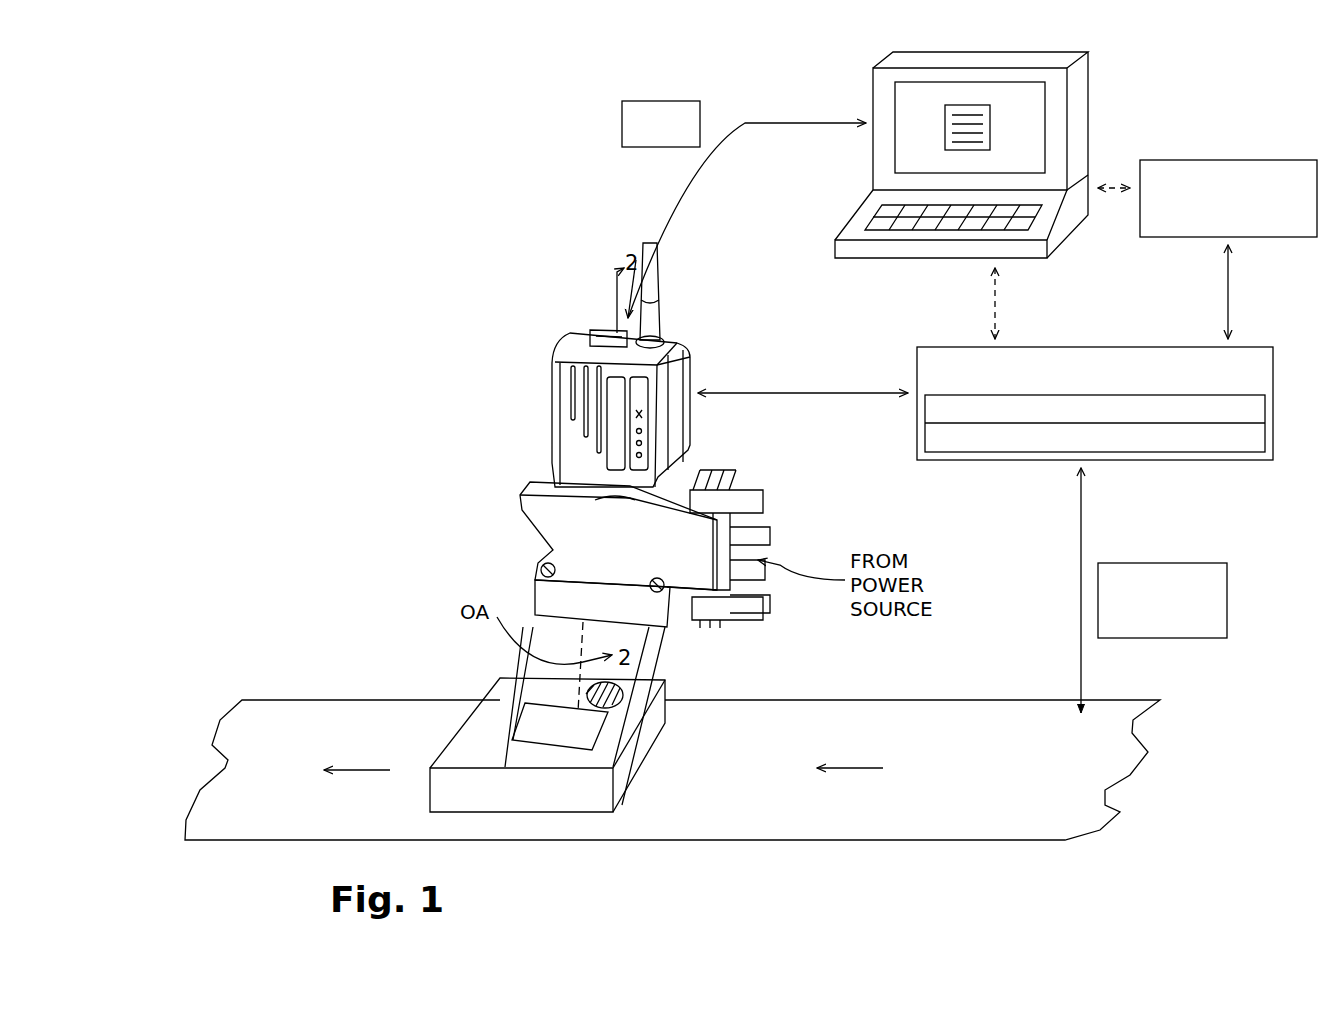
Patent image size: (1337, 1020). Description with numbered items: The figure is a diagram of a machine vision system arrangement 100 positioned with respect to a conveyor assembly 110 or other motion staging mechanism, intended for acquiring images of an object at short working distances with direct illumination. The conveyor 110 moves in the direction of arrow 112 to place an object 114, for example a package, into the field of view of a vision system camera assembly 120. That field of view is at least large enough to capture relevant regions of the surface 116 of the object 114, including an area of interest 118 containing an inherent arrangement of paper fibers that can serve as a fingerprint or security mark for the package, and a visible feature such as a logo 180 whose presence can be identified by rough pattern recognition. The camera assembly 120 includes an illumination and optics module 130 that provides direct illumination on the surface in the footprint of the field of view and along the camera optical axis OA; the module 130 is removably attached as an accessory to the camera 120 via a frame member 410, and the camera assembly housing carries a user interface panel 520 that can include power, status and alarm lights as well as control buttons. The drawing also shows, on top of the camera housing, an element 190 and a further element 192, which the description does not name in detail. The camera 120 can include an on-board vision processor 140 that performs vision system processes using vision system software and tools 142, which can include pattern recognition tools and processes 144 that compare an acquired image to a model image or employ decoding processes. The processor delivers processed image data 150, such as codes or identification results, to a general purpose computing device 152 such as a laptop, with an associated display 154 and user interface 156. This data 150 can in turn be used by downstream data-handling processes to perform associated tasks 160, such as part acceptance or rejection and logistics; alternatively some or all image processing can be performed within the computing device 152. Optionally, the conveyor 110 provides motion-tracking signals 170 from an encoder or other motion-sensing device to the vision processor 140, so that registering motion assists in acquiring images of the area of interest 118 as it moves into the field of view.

The vision system arrangement 100 is at (567, 204).
The conveyor assembly 110 is at (746, 849).
The arrow 112 is at (848, 768).
The object 114 is at (578, 797).
The surface 116 is at (499, 698).
The area of interest 118 is at (623, 690).
The vision system camera assembly 120 is at (632, 365).
The illumination and optics module 130 is at (534, 518).
The vision processor 140 is at (985, 479).
The vision system tools 142 is at (928, 408).
The pattern recognition tools/processes 144 is at (930, 443).
The processed image data 150 is at (678, 100).
The computing device 152 is at (984, 134).
The display 154 is at (1015, 92).
The user interface 156 is at (1002, 203).
The tasks 160 is at (1232, 165).
The motion-tracking signals 170 is at (1130, 640).
The logo 180 is at (590, 728).
The button 190 is at (604, 338).
The antenna 192 is at (666, 325).
The frame member 410 is at (689, 414).
The user interface panel 520 is at (643, 450).